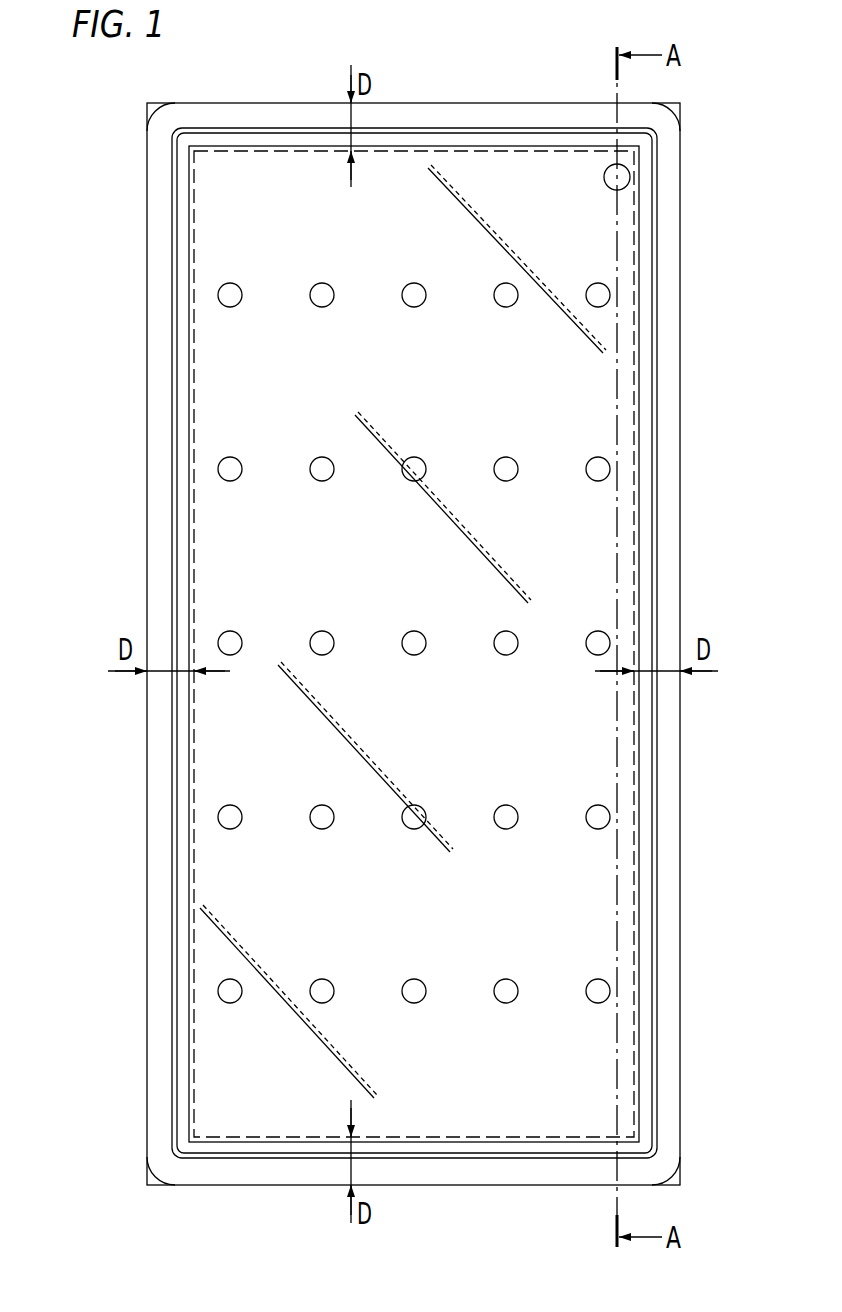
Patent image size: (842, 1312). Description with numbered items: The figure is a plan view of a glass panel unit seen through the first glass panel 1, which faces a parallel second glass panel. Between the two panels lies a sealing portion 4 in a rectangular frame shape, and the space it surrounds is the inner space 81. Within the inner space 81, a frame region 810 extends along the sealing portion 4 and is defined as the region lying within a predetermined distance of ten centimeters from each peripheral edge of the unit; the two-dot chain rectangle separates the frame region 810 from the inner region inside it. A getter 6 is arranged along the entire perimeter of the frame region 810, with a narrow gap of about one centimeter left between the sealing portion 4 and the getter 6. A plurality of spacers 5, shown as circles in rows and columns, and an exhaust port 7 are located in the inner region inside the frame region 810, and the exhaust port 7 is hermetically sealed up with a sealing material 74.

The first glass panel 1 is at (205, 1054).
The sealing portion 4 is at (272, 112).
The spacers 5 is at (232, 810).
The getter 6 is at (297, 1158).
The exhaust port 7 is at (612, 186).
The sealing material 74 is at (589, 201).
The inner space 81 is at (573, 750).
The frame region 810 is at (648, 886).